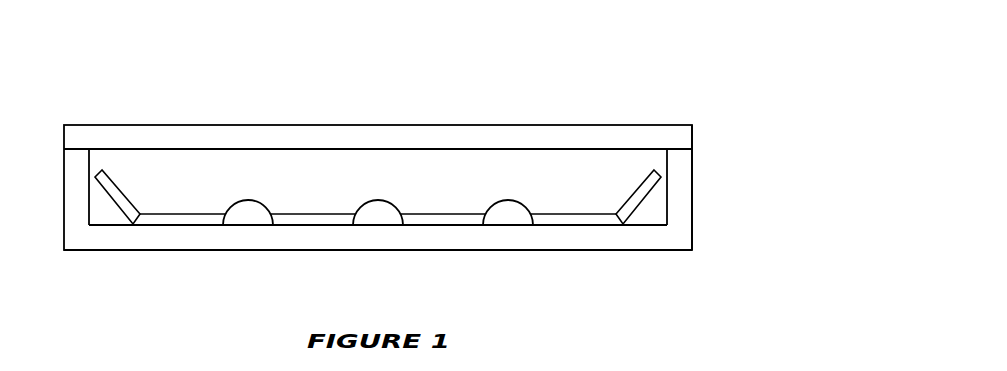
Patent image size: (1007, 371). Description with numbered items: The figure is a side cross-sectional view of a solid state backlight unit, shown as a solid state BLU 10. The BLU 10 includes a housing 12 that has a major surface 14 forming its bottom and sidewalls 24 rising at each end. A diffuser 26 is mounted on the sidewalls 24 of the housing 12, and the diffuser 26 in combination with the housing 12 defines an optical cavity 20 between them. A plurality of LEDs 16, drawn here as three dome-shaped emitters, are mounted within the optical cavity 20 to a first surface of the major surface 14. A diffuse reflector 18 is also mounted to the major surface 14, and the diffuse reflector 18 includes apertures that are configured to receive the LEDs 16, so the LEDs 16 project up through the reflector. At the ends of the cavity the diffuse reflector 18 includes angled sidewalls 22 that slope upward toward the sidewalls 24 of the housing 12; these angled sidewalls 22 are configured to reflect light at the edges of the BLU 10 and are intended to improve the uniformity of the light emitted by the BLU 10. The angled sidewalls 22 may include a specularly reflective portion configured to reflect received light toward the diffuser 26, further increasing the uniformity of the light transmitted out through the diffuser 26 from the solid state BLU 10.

The solid state BLU 10 is at (676, 74).
The housing 12 is at (692, 165).
The major surface 14 is at (522, 237).
The LEDs 16 is at (248, 212).
The diffuse reflector 18 is at (433, 220).
The optical cavity 20 is at (503, 169).
The angled sidewalls 22 is at (103, 178).
The sidewalls 24 is at (678, 218).
The diffuser 26 is at (413, 140).